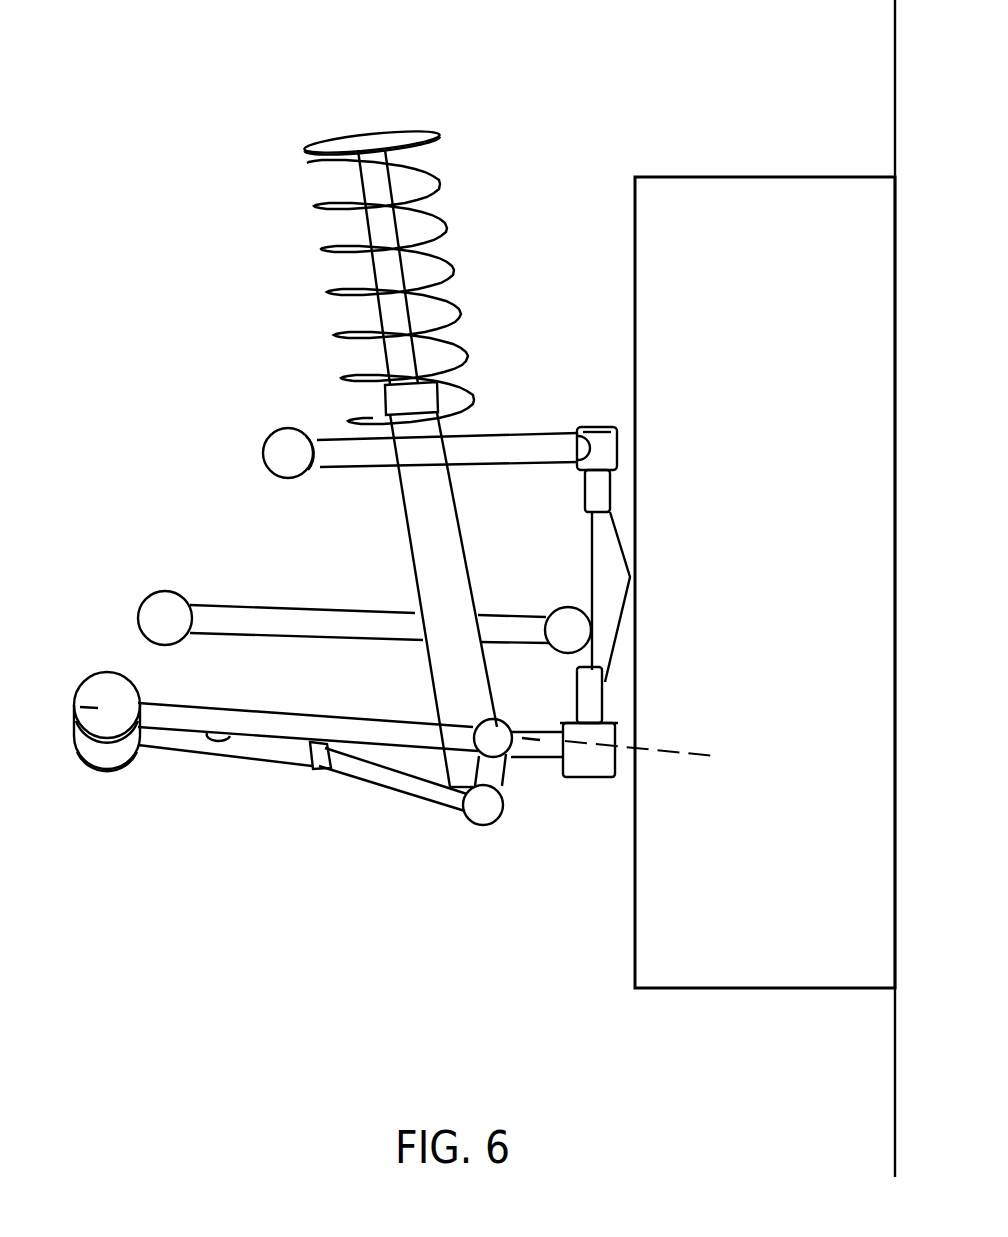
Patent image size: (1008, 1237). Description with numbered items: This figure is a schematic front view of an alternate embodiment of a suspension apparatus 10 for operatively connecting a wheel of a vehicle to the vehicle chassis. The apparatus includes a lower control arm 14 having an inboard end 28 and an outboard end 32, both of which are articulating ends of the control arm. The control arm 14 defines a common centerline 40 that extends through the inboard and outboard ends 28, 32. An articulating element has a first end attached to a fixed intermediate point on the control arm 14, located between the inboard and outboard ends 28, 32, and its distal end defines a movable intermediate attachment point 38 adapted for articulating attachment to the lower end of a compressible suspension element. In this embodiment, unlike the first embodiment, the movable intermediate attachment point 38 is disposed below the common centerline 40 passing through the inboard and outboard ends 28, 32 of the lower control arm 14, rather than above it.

The suspension apparatus 10 is at (467, 588).
The lower control arm 14 is at (258, 720).
The inboard end 28 is at (110, 717).
The outboard end 32 is at (590, 763).
The movable intermediate attachment point 38 is at (480, 807).
The common centerline 40 is at (40, 702).